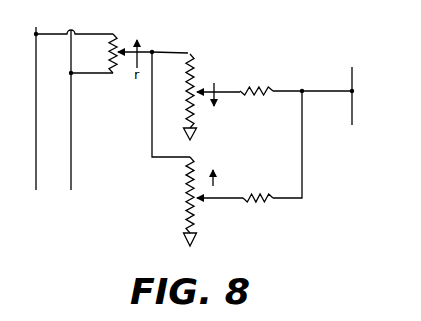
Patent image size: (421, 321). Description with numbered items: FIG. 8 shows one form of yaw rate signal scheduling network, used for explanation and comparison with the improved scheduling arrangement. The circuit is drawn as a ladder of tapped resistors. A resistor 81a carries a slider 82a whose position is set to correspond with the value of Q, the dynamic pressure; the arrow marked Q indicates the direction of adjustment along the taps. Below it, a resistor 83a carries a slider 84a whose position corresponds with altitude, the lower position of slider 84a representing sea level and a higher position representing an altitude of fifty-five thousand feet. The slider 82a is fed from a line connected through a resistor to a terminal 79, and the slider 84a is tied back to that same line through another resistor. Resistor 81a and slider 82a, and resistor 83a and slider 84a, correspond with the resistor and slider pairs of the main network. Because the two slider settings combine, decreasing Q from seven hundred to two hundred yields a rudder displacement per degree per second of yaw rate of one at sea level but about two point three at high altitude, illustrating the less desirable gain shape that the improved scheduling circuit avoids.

The reference voltage terminal 79 is at (354, 111).
The resistor 81a is at (197, 62).
The slider 82a is at (217, 100).
The resistor 83a is at (197, 168).
The slider 84a is at (214, 199).